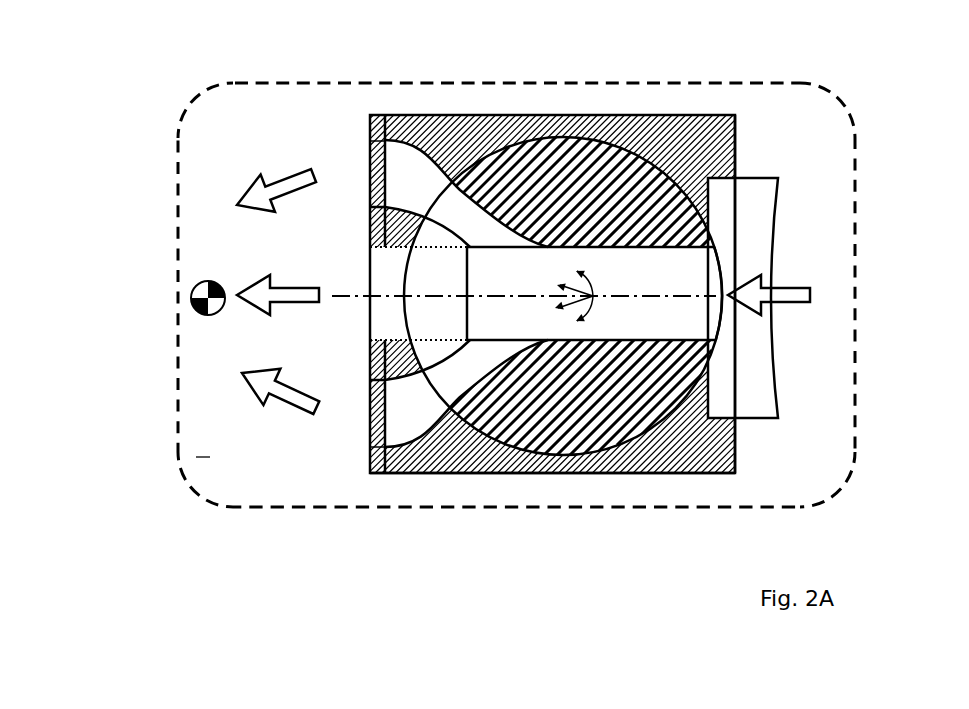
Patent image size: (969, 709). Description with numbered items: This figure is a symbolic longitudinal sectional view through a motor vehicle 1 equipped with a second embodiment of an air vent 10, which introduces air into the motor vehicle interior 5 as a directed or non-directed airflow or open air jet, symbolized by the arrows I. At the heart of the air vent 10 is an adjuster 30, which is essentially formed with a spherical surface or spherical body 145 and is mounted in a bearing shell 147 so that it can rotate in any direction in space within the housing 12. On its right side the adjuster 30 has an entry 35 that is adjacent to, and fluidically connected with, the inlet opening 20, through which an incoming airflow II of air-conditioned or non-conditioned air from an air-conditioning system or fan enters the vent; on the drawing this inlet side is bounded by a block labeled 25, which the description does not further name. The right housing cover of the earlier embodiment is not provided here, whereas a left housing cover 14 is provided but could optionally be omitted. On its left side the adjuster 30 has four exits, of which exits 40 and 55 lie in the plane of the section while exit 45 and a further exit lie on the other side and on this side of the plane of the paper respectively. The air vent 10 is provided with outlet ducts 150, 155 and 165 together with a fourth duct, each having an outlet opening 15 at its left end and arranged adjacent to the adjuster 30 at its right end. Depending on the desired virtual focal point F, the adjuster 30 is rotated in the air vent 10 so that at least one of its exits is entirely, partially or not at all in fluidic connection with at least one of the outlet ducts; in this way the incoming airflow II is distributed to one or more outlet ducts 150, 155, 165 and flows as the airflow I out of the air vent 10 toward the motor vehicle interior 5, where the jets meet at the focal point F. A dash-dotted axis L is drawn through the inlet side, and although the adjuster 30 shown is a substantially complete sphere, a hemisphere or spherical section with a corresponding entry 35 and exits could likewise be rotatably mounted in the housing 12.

The motor vehicle 1 is at (820, 462).
The motor vehicle interior 5 is at (203, 445).
The air vent 10 is at (643, 135).
The housing 12 is at (700, 133).
The left housing cover 14 is at (373, 452).
The outlet opening 15 is at (370, 178).
The inlet opening 20 is at (678, 306).
The outlet pipe 25 is at (757, 205).
The adjuster 30 is at (562, 190).
The entry 35 is at (720, 268).
The exit 40 is at (436, 185).
The exit 45 is at (392, 303).
The exit 55 is at (433, 397).
The spherical body 145 is at (555, 410).
The bearing shell 147 is at (637, 450).
The outlet duct 150 is at (407, 162).
The outlet duct 155 is at (392, 322).
The outlet duct 165 is at (405, 428).
The airflow I is at (258, 200).
The incoming airflow II is at (795, 297).
The virtual focal point F is at (192, 296).
The longitudinal axis L is at (712, 333).